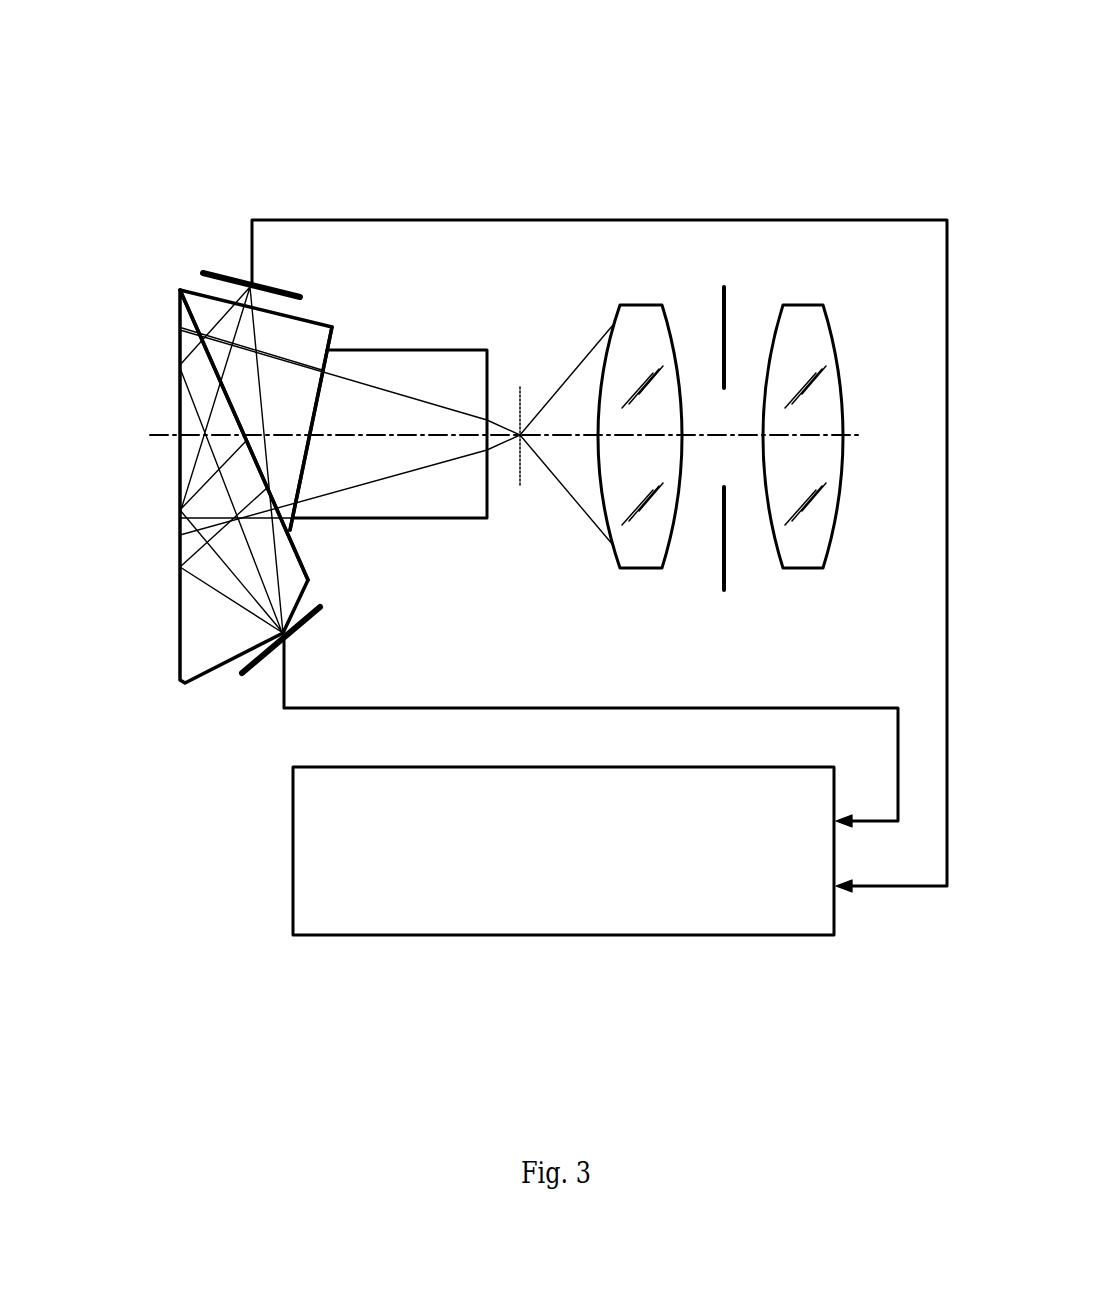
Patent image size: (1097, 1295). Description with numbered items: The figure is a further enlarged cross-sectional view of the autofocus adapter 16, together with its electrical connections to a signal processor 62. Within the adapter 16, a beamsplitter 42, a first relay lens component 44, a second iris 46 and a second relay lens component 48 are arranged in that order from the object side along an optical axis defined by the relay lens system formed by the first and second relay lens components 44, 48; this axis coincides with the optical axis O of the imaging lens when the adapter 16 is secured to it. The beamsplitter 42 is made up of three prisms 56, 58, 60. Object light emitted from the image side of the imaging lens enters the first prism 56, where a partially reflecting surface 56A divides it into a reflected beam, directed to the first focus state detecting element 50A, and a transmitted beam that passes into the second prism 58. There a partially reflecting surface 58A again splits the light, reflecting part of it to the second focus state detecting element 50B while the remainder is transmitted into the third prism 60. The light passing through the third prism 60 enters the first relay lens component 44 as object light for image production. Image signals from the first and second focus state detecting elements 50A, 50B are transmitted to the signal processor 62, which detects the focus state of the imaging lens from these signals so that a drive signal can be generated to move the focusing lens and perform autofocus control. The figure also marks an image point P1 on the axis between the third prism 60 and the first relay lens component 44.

The autofocus adapter 16 is at (788, 133).
The beamsplitter 42 is at (246, 481).
The first relay lens component 44 is at (640, 320).
The second iris 46 is at (723, 287).
The second relay lens component 48 is at (812, 322).
The first focus state detecting element 50A is at (323, 613).
The second focus state detecting element 50B is at (208, 270).
The first prism 56 is at (192, 657).
The partially reflecting surface of the first prism 56A is at (263, 470).
The second prism 58 is at (327, 321).
The partially reflecting surface of the second prism 58A is at (316, 412).
The third prism 60 is at (433, 348).
The signal processor 62 is at (778, 935).
The optical axis O is at (150, 430).
The image point P1 is at (520, 502).